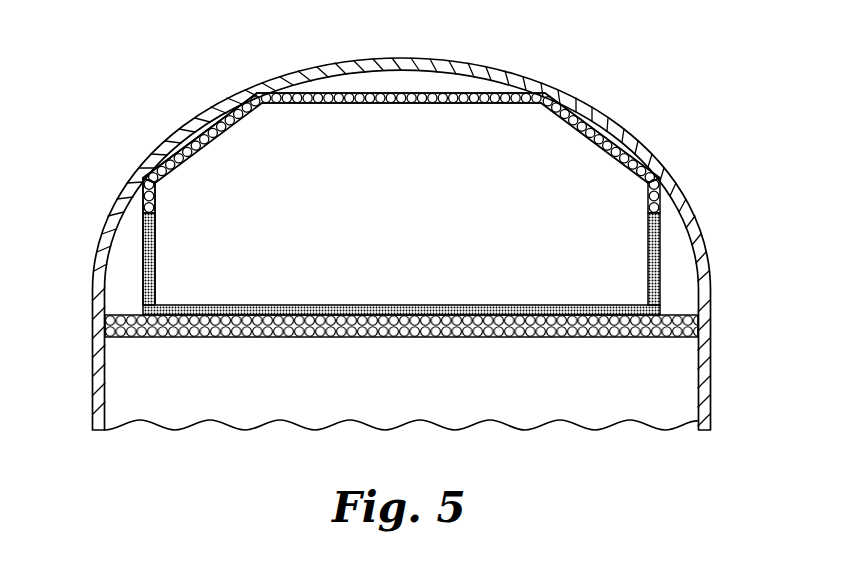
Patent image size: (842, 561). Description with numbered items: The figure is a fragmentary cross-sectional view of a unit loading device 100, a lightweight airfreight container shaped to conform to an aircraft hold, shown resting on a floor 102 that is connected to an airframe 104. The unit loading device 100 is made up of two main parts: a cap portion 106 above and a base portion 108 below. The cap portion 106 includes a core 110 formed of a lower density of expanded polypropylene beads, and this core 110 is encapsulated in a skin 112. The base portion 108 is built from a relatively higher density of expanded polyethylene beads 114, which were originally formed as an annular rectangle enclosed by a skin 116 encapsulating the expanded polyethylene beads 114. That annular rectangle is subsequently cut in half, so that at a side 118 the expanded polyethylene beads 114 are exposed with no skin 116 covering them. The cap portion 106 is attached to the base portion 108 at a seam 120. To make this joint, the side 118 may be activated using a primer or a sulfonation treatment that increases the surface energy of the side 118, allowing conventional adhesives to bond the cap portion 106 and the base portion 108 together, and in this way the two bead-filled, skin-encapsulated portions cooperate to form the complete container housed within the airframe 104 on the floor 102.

The unit loading device 100 is at (408, 229).
The floor 102 is at (662, 312).
The airframe 104 is at (687, 197).
The cap portion 106 is at (315, 82).
The base portion 108 is at (133, 268).
The core 110 is at (361, 92).
The skin 112 is at (411, 92).
The expanded polyethylene beads 114 is at (158, 281).
The skin 116 is at (272, 305).
The side 118 is at (158, 212).
The seam 120 is at (142, 177).